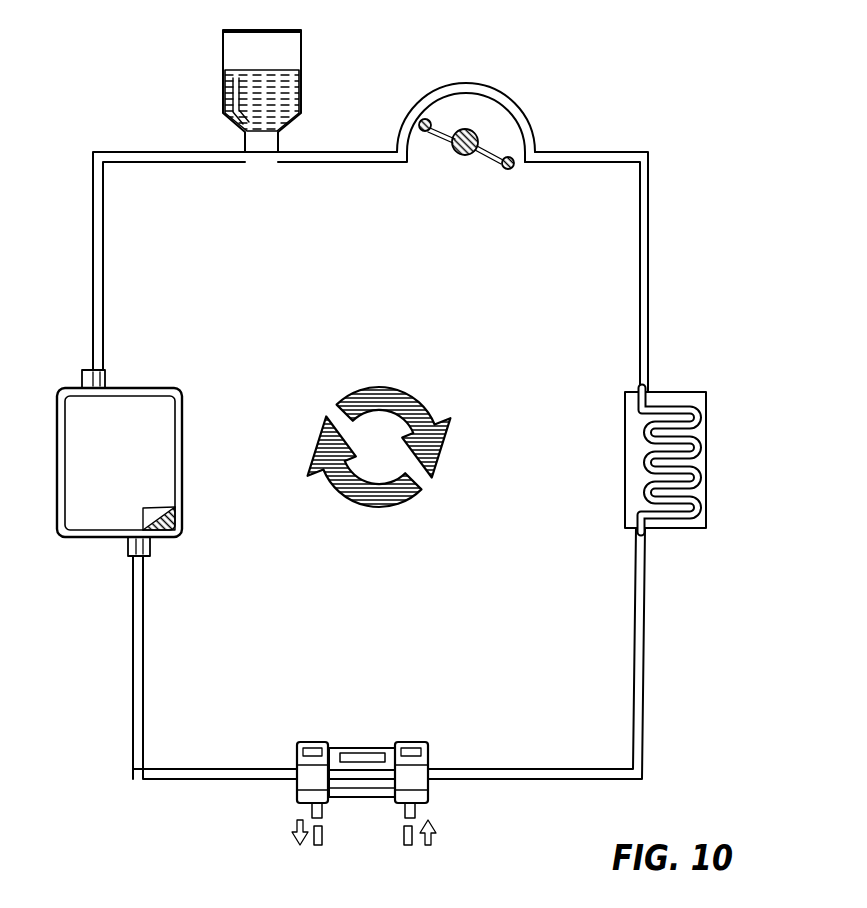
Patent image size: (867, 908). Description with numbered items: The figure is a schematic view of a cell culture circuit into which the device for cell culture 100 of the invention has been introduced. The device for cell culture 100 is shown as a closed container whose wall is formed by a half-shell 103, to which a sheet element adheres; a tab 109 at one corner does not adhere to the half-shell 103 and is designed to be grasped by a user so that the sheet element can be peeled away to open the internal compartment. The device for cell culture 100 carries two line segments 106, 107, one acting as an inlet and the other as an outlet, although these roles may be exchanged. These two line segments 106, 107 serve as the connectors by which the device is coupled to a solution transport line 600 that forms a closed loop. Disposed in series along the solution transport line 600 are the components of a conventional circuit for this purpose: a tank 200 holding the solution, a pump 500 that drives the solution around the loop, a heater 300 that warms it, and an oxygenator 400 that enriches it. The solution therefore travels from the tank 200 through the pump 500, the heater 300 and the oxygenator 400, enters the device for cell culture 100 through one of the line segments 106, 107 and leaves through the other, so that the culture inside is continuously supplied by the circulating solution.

The device for cell culture 100 is at (169, 455).
The half-shell 103 is at (152, 462).
The line segment 106 is at (151, 548).
The line segment 107 is at (106, 380).
The tab 109 is at (146, 521).
The tank 200 is at (301, 95).
The heater 300 is at (622, 494).
The oxygenator 400 is at (429, 790).
The pump 500 is at (545, 112).
The solution transport line 600 is at (133, 655).